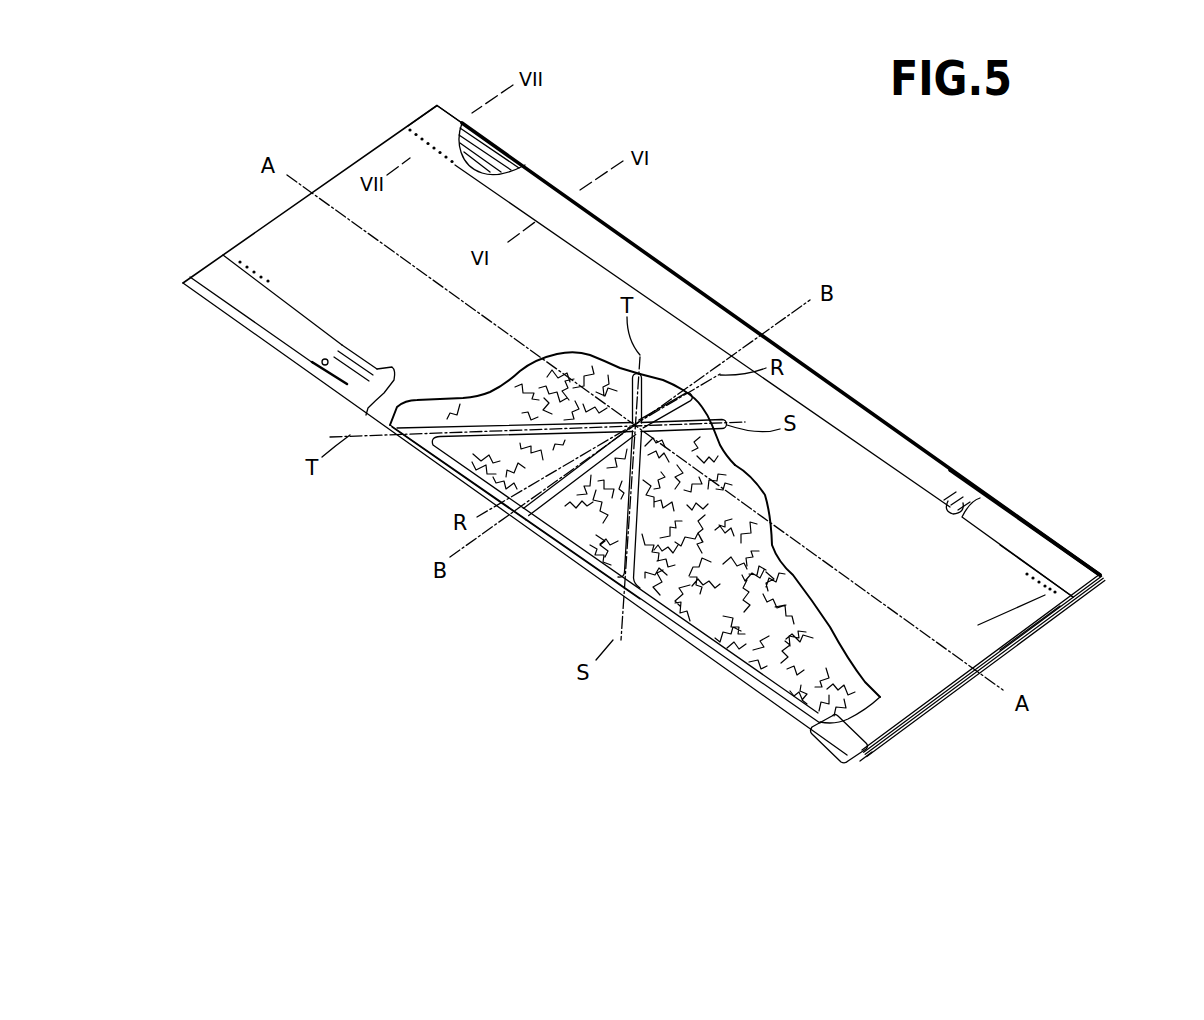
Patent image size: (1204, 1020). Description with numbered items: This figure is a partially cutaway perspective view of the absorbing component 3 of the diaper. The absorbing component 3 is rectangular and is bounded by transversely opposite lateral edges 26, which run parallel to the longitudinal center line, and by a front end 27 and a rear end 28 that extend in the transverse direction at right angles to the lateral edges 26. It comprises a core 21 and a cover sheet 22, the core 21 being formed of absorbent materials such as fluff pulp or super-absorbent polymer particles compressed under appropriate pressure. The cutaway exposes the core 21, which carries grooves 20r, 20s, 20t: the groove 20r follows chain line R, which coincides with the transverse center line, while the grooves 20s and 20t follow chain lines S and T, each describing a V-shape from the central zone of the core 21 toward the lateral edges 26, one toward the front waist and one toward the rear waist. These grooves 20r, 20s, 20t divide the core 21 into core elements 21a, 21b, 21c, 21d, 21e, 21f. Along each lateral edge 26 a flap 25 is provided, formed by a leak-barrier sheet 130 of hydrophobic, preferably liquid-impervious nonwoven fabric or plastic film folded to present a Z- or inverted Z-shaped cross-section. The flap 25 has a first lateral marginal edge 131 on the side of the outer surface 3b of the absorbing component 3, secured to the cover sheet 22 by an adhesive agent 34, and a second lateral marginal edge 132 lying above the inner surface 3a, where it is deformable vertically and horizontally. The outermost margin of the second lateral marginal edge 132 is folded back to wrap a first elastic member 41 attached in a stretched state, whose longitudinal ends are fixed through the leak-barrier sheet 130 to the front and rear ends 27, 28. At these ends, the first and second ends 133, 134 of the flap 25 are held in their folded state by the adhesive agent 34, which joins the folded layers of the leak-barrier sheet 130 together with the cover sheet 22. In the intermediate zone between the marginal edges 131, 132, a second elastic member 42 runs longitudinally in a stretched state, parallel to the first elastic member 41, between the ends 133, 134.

The absorbing component 3 is at (589, 72).
The inner surface of the absorbing component 3a is at (978, 625).
The outer surface of the absorbing component 3b is at (868, 748).
The groove 20r is at (480, 487).
The groove 20s is at (733, 448).
The groove 20t is at (580, 424).
The core 21 is at (798, 717).
The core element 21a is at (722, 650).
The core element 21b is at (527, 367).
The core element 21c is at (683, 413).
The core element 21d is at (555, 517).
The core element 21e is at (652, 390).
The core element 21f is at (450, 462).
The cover sheet 22 is at (907, 670).
The flap 25 is at (272, 312).
The lateral edge 26 is at (1013, 557).
The front end 27 is at (1018, 605).
The rear end 28 is at (383, 153).
The adhesive agent 34 is at (440, 155).
The first elastic member 41 is at (322, 383).
The second elastic member 42 is at (380, 364).
The leak-barrier sheet 130 is at (318, 333).
The first lateral marginal edge 131 is at (1075, 604).
The second lateral marginal edge 132 is at (885, 428).
The first end of the flap 133 is at (1083, 567).
The second end of the flap 134 is at (430, 118).